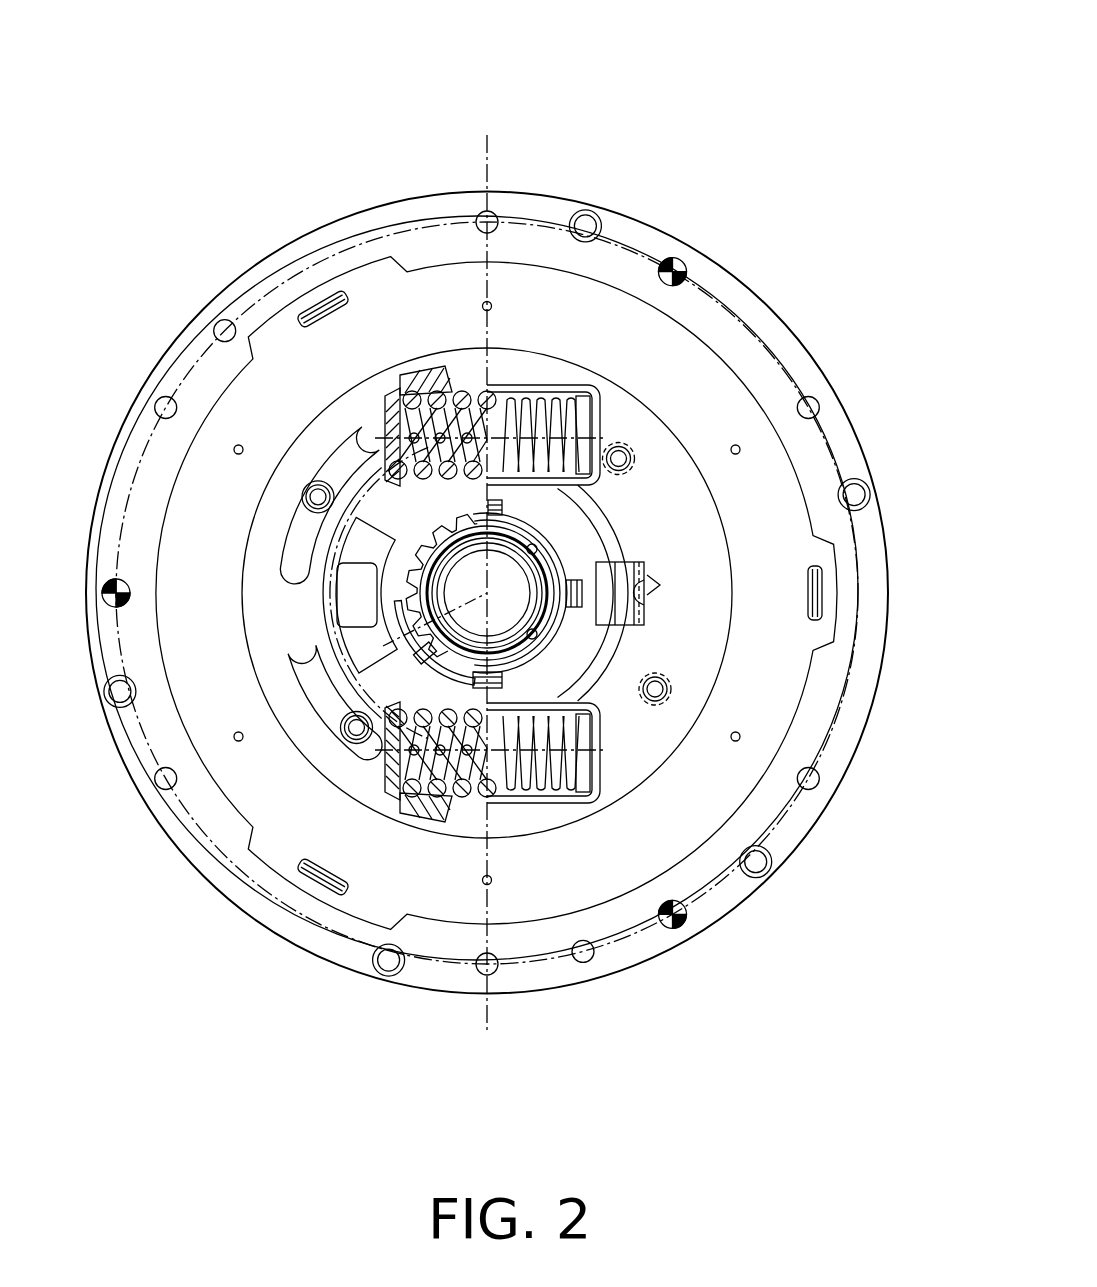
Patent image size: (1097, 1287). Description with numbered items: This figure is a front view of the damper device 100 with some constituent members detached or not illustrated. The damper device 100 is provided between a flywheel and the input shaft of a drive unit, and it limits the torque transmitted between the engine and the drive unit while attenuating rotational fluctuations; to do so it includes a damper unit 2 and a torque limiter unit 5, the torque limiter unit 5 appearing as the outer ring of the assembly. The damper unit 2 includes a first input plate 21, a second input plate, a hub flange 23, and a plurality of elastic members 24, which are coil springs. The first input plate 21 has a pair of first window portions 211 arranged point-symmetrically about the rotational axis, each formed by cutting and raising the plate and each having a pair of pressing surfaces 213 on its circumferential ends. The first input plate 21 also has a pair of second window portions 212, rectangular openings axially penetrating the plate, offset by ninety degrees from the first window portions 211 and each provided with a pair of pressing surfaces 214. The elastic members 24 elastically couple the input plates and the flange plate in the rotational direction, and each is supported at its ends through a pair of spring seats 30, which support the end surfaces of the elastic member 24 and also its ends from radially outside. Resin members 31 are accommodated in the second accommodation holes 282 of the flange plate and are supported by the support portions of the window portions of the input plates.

The damper device 100 is at (630, 112).
The torque limiter unit 5 is at (740, 276).
The damper unit 2 is at (684, 473).
The first input plate 21 is at (678, 513).
The second window portion 212 is at (647, 590).
The hub flange 23 is at (364, 540).
The second accommodation hole 282 is at (317, 580).
The resin member 31 is at (357, 594).
The pressing surface 214 is at (647, 612).
The elastic member 24 is at (492, 305).
The spring seat 30 is at (445, 383).
The first window portion 211 is at (493, 807).
The pressing surface 213 is at (586, 788).